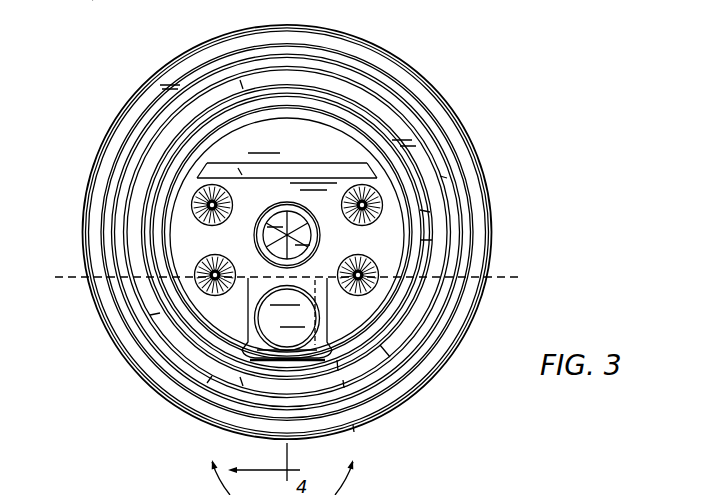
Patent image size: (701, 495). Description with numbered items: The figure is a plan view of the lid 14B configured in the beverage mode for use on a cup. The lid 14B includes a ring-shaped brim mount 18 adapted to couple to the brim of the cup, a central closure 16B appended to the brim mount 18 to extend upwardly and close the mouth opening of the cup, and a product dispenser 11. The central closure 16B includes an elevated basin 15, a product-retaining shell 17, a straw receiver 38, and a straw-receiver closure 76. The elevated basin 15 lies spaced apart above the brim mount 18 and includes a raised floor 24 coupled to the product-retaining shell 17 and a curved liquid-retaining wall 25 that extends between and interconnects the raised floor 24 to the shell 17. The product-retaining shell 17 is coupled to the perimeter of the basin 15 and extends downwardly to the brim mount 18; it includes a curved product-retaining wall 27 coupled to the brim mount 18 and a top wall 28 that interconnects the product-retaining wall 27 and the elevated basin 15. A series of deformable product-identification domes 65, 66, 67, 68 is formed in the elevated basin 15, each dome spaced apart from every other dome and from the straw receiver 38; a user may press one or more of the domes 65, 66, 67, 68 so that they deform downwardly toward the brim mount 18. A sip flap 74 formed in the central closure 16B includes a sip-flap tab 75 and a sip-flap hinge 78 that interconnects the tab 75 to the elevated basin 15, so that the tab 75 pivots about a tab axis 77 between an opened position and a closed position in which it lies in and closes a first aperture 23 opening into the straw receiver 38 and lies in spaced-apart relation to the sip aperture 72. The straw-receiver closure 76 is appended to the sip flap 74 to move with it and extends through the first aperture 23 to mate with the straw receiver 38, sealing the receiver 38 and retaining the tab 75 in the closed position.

The product dispenser 11 is at (247, 254).
The lid 14B is at (427, 53).
The elevated basin 15 is at (488, 47).
The central closure 16B is at (658, 172).
The product-retaining shell 17 is at (563, 153).
The ring-shaped brim mount 18 is at (393, 412).
The first aperture 23 is at (188, 235).
The raised floor 24 is at (385, 120).
The curved liquid-retaining wall 25 is at (392, 67).
The curved product-retaining wall 27 is at (440, 255).
The top wall 28 is at (422, 175).
The straw receiver 38 is at (286, 212).
The deformable product-identification dome 65 is at (375, 278).
The deformable product-identification dome 66 is at (400, 208).
The deformable product-identification dome 67 is at (195, 290).
The deformable product-identification dome 68 is at (178, 222).
The sip aperture 72 is at (268, 359).
The sip flap 74 is at (92, 0).
The sip-flap tab 75 is at (268, 353).
The straw-receiver closure 76 is at (283, 333).
The tab axis 77 is at (497, 277).
The sip-flap hinge 78 is at (335, 357).